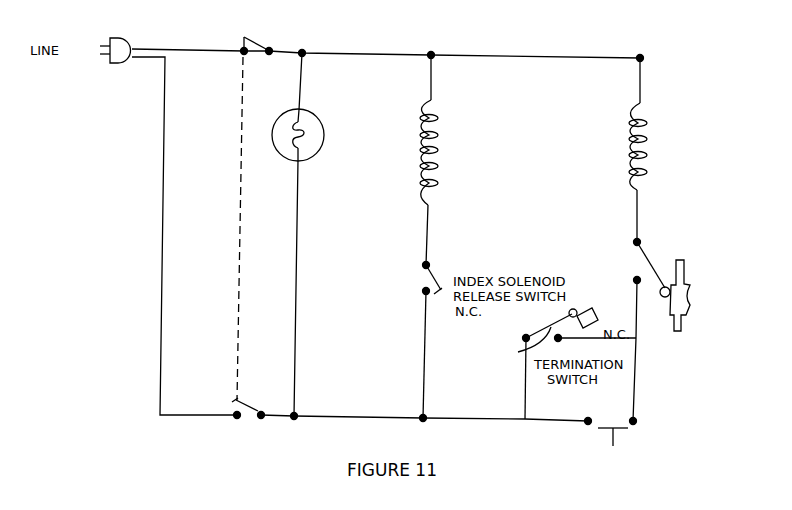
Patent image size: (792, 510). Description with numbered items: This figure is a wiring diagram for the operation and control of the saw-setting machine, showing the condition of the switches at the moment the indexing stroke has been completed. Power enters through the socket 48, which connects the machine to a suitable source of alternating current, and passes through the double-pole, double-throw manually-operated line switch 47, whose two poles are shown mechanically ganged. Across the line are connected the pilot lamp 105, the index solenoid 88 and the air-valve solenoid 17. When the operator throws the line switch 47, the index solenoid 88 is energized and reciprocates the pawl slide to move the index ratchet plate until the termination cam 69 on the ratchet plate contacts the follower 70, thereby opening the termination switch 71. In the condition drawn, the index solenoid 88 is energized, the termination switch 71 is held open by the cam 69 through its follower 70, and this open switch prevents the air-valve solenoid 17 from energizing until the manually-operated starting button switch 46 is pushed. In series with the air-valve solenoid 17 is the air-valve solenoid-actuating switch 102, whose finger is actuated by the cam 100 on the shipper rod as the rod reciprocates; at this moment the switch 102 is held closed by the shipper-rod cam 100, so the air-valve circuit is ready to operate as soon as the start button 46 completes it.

The socket 48 is at (121, 41).
The line switch 47 is at (250, 403).
The pilot lamp 105 is at (311, 143).
The index solenoid 88 is at (438, 117).
The air-valve solenoid 17 is at (641, 176).
The air-valve solenoid-actuating switch 102 is at (648, 262).
The cam 100 is at (684, 307).
The follower 70 is at (546, 330).
The termination cam 69 is at (589, 318).
The termination switch 71 is at (518, 352).
The starting button switch 46 is at (601, 430).